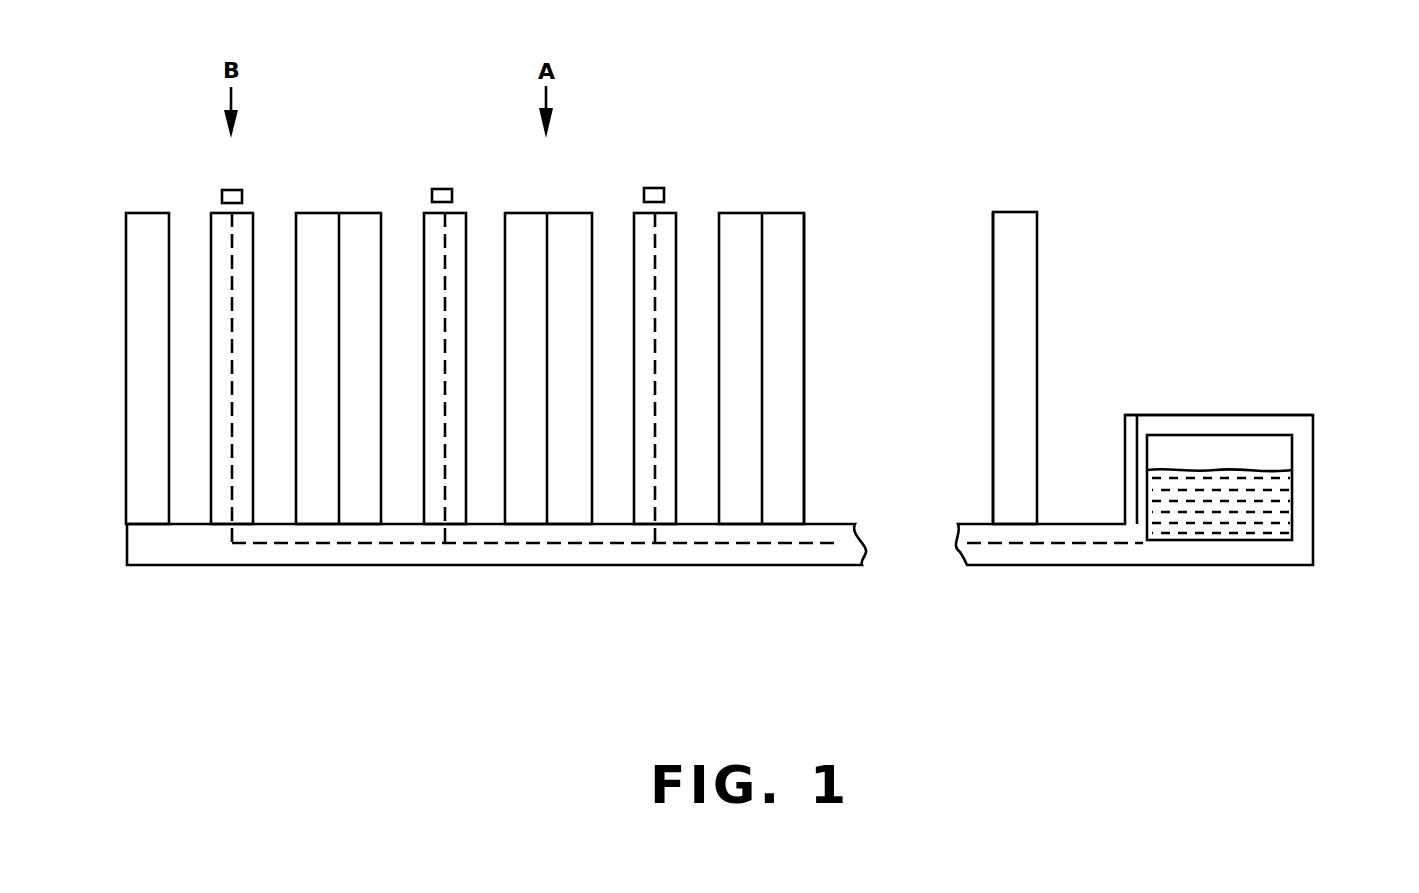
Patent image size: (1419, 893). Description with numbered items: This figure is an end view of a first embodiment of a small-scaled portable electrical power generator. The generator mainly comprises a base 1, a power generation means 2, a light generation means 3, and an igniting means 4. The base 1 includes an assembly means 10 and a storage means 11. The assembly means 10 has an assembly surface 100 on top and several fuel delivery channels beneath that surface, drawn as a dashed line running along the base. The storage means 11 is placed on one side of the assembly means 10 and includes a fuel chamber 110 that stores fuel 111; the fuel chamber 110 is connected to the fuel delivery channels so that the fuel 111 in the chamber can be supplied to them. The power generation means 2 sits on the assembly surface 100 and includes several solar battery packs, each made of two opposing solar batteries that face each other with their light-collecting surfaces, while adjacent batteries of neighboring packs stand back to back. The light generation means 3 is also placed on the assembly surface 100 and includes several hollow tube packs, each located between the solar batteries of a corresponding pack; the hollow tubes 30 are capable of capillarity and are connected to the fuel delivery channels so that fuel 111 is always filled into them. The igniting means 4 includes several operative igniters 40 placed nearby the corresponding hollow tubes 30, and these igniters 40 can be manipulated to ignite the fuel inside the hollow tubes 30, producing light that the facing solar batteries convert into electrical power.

The base 1 is at (518, 378).
The power generation means 2 is at (400, 212).
The light generation means 3 is at (683, 206).
The igniting means 4 is at (452, 176).
The assembly means 10 is at (1063, 528).
The storage means 11 is at (1203, 414).
The hollow tube 30 is at (665, 262).
The operative igniter 40 is at (452, 194).
The assembly surface 100 is at (830, 524).
The fuel chamber 110 is at (1255, 452).
The fuel 111 is at (1270, 519).